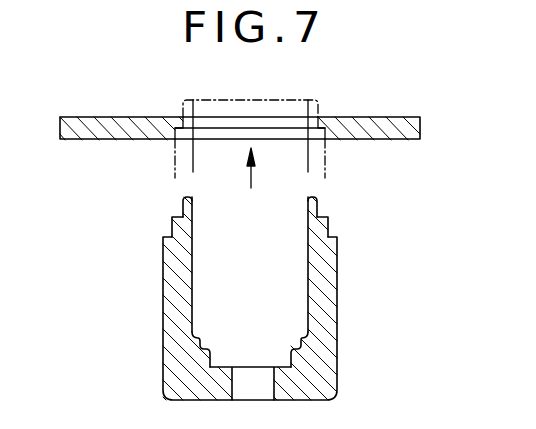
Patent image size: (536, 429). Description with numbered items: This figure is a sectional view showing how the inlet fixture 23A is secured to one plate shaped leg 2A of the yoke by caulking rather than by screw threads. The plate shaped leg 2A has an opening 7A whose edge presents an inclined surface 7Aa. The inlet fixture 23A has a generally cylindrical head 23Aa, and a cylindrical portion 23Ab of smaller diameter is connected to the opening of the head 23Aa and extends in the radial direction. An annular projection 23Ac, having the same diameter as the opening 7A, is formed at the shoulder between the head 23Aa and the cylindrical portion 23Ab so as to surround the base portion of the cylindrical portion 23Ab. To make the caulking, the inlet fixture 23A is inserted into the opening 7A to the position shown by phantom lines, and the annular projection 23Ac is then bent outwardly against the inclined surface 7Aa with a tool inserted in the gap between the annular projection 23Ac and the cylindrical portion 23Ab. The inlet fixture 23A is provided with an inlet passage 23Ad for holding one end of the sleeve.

The plate shaped leg 2A is at (391, 123).
The opening 7A is at (261, 126).
The inclined surface 7Aa is at (327, 125).
The inlet fixture 23A is at (292, 296).
The cylindrical portion 23Ab is at (313, 203).
The annular projection 23Ac is at (322, 221).
The inlet passage 23Ad is at (263, 292).
The head 23Aa is at (327, 362).